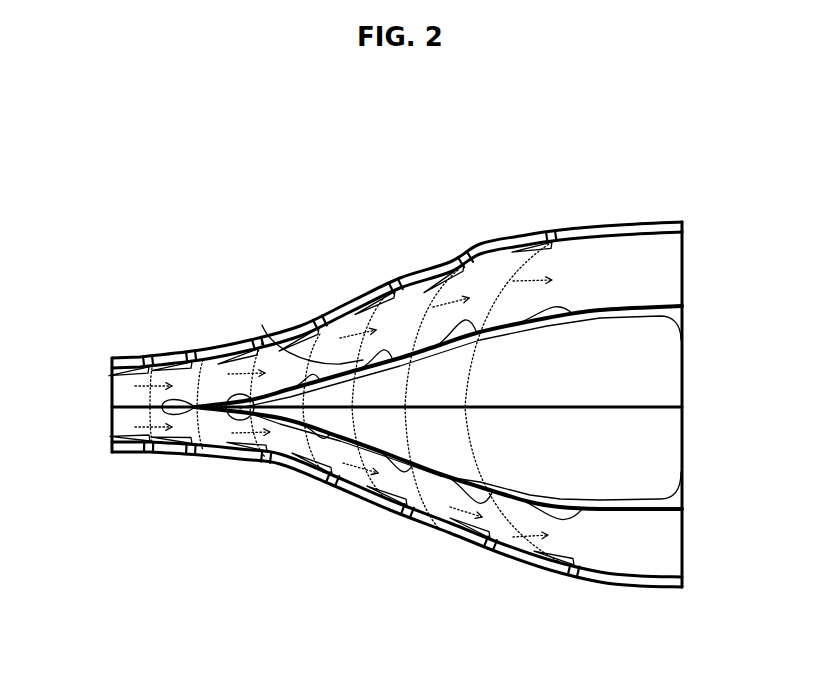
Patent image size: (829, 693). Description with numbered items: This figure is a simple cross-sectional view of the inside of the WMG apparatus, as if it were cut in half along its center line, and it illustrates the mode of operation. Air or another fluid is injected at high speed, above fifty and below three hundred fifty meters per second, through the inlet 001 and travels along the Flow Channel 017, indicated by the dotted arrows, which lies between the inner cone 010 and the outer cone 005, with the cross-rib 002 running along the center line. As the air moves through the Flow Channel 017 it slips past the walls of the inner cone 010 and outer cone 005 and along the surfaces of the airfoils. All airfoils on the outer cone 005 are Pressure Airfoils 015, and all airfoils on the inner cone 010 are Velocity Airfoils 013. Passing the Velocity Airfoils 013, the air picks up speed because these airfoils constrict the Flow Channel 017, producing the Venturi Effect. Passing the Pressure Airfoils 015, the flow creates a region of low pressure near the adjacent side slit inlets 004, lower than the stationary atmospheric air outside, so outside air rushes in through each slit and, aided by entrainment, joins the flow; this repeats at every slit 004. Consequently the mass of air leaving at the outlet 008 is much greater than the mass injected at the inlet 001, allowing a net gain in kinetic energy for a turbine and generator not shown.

The inlet 001 is at (106, 387).
The cross-rib 002 is at (667, 404).
The side slit inlets 004 is at (461, 250).
The outer cone 005 is at (625, 228).
The outlet 008 is at (690, 262).
The inner cone 010 is at (645, 350).
The Velocity Airfoils 013 is at (289, 386).
The Pressure Airfoils 015 is at (356, 292).
The Flow Channel 017 is at (621, 281).